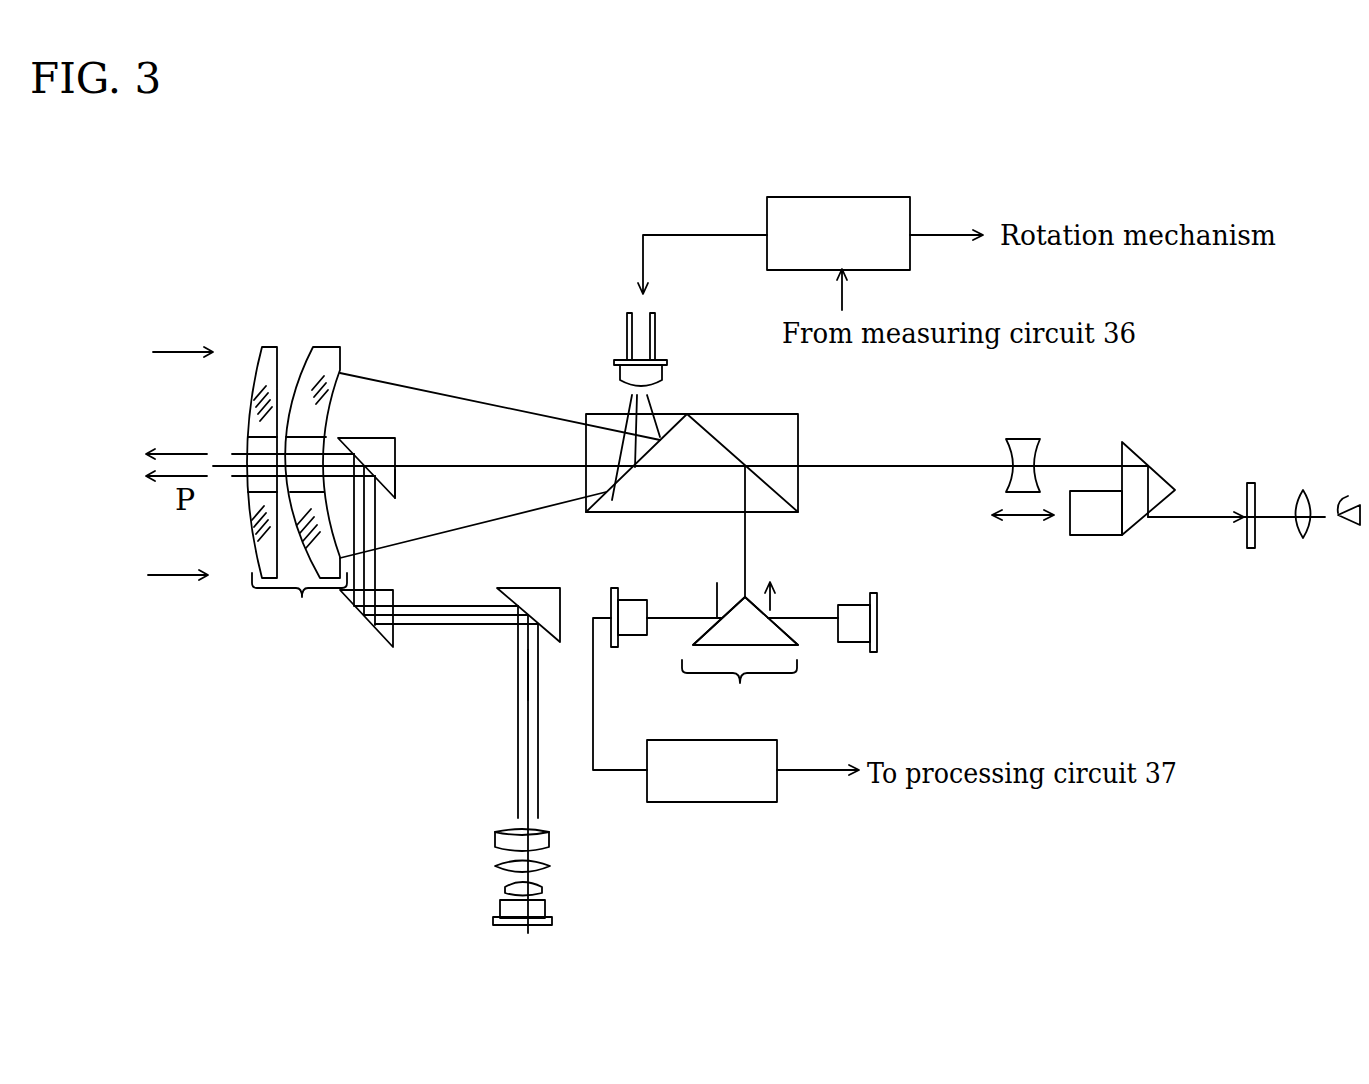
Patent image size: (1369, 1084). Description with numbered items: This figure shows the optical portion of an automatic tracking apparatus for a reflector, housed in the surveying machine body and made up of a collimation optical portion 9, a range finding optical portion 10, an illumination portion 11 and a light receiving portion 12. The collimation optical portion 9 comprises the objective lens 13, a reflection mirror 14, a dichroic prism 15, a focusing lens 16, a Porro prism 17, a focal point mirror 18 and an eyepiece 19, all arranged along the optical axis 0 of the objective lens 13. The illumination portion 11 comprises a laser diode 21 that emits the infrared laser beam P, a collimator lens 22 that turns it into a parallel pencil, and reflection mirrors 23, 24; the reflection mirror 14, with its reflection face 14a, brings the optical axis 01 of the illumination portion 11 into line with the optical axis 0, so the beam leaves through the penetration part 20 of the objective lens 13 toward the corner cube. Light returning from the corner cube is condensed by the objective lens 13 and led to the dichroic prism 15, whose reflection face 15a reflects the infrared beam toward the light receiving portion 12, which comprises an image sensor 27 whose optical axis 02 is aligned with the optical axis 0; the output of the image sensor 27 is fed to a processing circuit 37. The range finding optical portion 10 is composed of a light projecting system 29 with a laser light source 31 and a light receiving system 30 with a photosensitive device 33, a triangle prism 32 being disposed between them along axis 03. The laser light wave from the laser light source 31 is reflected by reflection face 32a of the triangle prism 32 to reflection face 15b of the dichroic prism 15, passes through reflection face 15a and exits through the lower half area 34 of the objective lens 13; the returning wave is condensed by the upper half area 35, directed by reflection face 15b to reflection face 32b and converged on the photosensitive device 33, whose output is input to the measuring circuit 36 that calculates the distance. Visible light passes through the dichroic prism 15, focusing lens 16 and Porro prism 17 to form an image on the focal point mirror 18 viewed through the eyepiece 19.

The optical axis 0 is at (492, 462).
The optical axis of the illumination portion 01 is at (520, 657).
The optical axis of the light receiving portion 02 is at (632, 450).
The optical axis of reflected light 03 is at (746, 548).
The collimation optical portion 9 is at (953, 443).
The range finding optical portion 10 is at (739, 693).
The illumination portion 11 is at (453, 711).
The light receiving portion 12 is at (695, 371).
The objective lens 13 is at (299, 606).
The reflection mirror 14 is at (380, 437).
The reflection face 14a is at (410, 488).
The dichroic prism 15 is at (775, 423).
The reflection face 15a is at (677, 415).
The reflection face 15b is at (742, 458).
The focusing lens 16 is at (1030, 442).
The Porro prism 17 is at (1115, 537).
The focal point mirror 18 is at (1258, 485).
The eyepiece 19 is at (1300, 545).
The penetration part 20 is at (299, 372).
The laser diode 21 is at (553, 922).
The collimator lens 22 is at (487, 825).
The reflection mirror 23 is at (560, 588).
The reflection mirror 24 is at (385, 643).
The image sensor 27 is at (670, 352).
The light projecting system 29 is at (828, 592).
The light receiving system 30 is at (677, 590).
The laser light source 31 is at (853, 608).
The triangle prism 32 is at (787, 643).
The reflection face 32a is at (797, 637).
The reflection face 32b is at (693, 635).
The photosensitive device 33 is at (630, 635).
The lower half area 34 is at (263, 540).
The upper half area 35 is at (328, 352).
The measuring circuit 36 is at (713, 802).
The processing circuit 37 is at (887, 202).